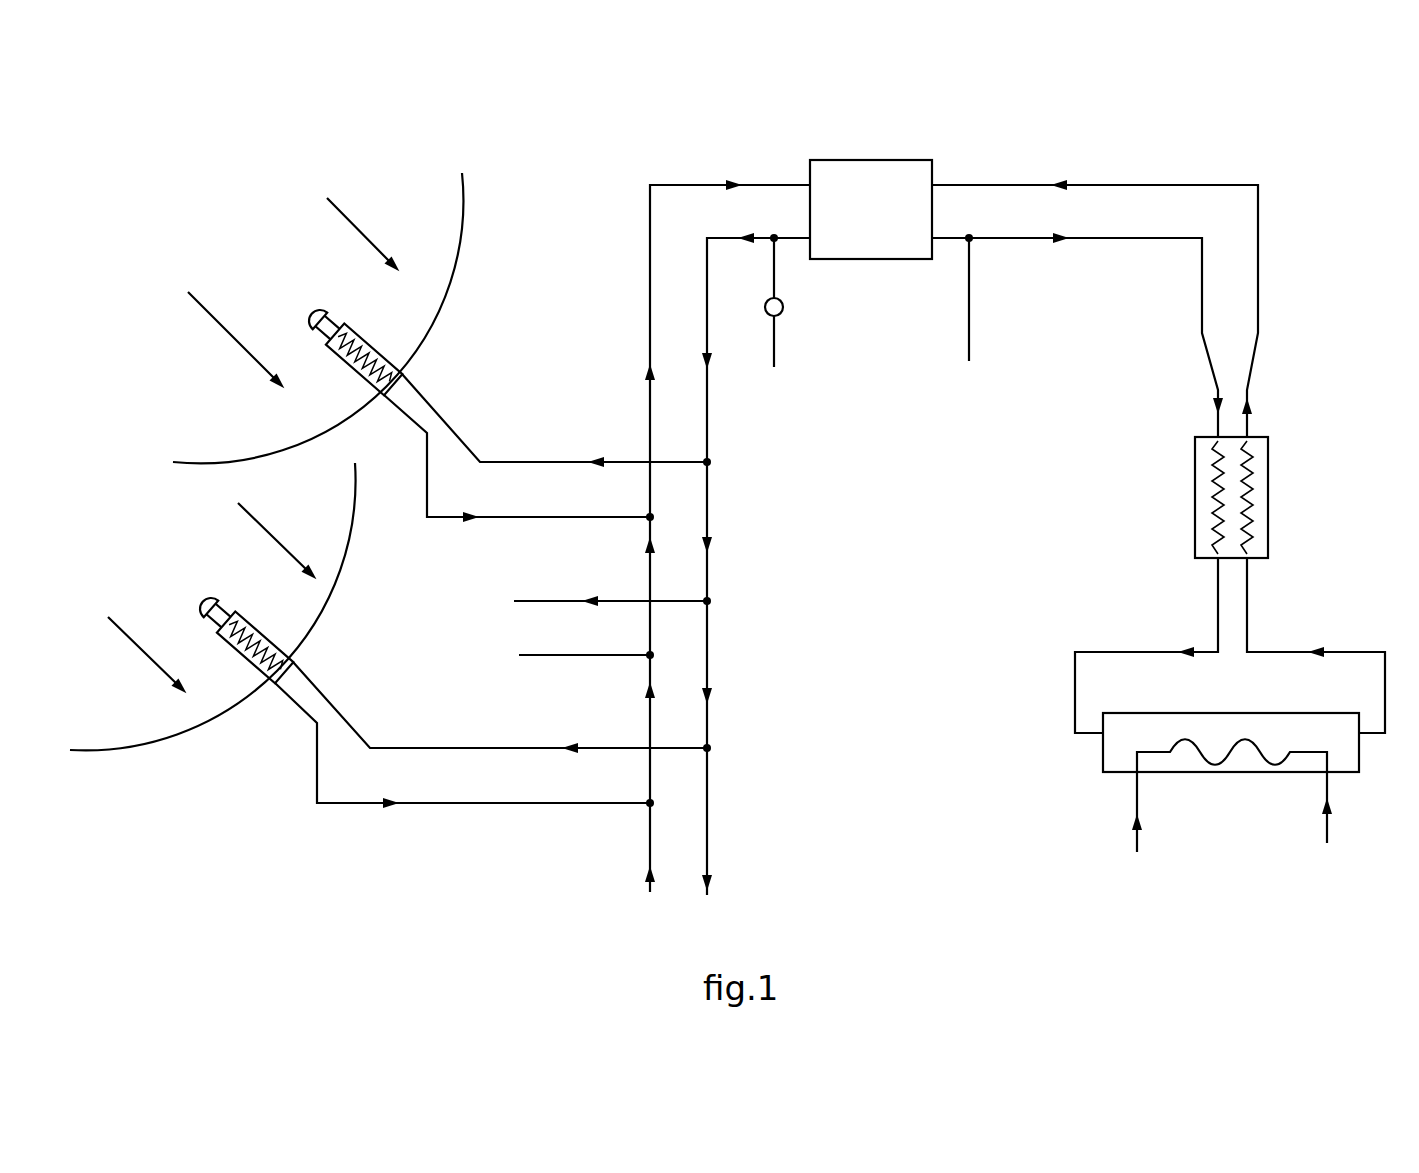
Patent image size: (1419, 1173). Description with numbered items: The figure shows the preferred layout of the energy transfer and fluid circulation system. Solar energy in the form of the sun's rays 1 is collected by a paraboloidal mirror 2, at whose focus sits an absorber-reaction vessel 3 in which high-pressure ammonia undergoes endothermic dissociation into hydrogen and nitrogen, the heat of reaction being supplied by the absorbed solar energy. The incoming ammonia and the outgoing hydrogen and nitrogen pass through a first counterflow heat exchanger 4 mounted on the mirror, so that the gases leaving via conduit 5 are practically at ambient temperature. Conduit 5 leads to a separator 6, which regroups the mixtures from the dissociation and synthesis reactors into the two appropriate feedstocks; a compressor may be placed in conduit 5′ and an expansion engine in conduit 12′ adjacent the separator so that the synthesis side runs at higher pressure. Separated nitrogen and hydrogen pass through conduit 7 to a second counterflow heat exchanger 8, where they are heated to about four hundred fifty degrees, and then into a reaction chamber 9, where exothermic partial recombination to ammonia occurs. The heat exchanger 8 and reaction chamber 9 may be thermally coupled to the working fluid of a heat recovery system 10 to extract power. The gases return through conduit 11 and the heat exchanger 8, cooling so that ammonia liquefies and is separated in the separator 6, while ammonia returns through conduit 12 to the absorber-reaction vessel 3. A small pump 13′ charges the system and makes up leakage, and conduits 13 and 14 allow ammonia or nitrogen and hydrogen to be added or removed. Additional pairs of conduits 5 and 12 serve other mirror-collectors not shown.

The sun's rays 1 is at (357, 223).
The paraboloidal mirror 2 is at (460, 218).
The absorber-reaction vessel 3 is at (314, 314).
The first counterflow heat exchanger 4 is at (377, 347).
The conduit 5 is at (565, 515).
The conduit 5′ is at (755, 183).
The separator 6 is at (895, 262).
The conduit 7 is at (1198, 313).
The second counterflow heat exchanger 8 is at (1270, 487).
The reaction chamber 9 is at (1118, 775).
The heat recovery system 10 is at (1323, 807).
The conduit 11 is at (1262, 312).
The conduit 12 is at (551, 459).
The conduit 12′ is at (758, 237).
The conduit 13 is at (774, 367).
The pump 13′ is at (783, 310).
The conduit 14 is at (973, 310).